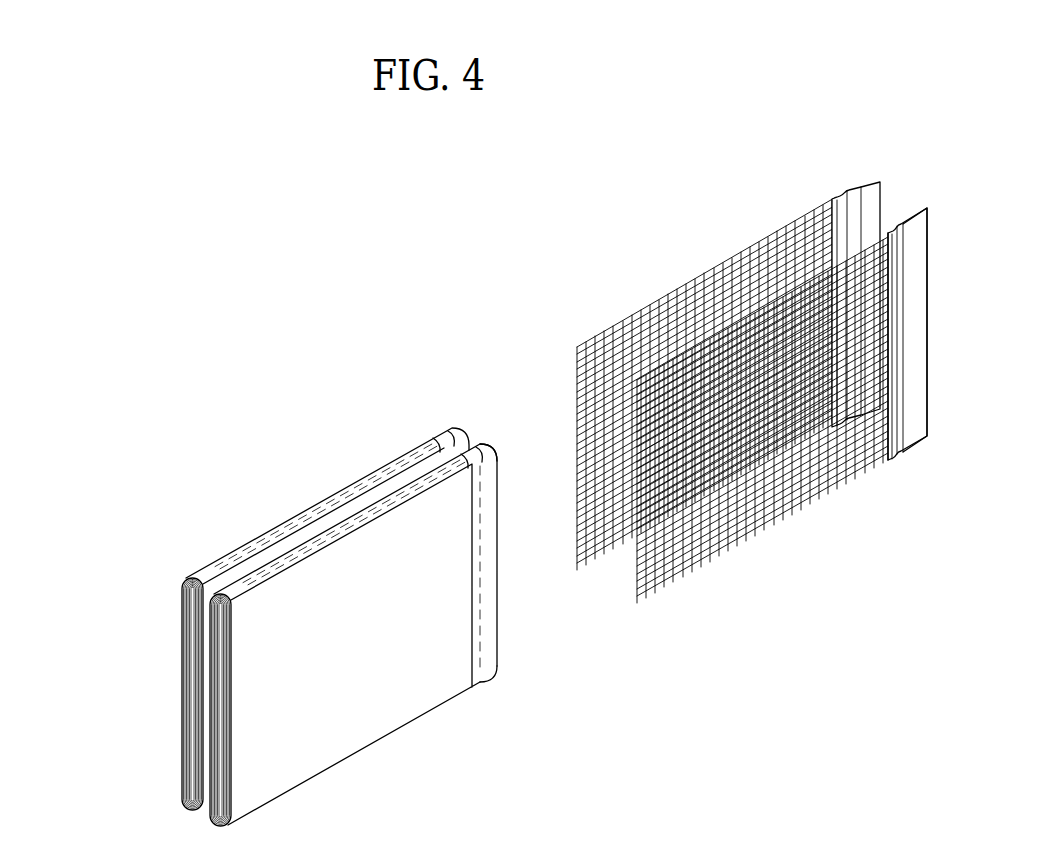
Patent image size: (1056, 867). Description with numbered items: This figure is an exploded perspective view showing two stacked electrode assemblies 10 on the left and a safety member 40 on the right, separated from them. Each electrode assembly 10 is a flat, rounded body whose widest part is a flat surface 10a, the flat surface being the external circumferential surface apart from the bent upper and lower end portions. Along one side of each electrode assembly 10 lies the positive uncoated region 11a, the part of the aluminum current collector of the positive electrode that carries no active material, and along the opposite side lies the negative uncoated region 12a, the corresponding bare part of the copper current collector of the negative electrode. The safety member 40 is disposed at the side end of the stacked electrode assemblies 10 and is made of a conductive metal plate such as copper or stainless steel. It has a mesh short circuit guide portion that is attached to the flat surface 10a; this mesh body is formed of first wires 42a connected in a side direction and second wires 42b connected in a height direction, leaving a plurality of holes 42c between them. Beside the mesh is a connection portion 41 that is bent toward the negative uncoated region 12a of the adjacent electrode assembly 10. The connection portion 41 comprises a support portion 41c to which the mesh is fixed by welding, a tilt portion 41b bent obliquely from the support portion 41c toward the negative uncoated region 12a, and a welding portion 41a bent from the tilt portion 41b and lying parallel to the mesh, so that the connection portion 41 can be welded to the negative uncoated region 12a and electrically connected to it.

The electrode assembly 10 is at (359, 601).
The flat surface 10a is at (400, 710).
The positive uncoated region 11a is at (199, 578).
The negative uncoated region 12a is at (453, 430).
The safety member 40 is at (785, 398).
The connection portion 41 is at (947, 298).
The welding portion 41a is at (913, 241).
The tilt portion 41b is at (905, 273).
The support portion 41c is at (898, 314).
The first wires 42a is at (638, 602).
The second wires 42b is at (637, 588).
The holes 42c is at (827, 480).